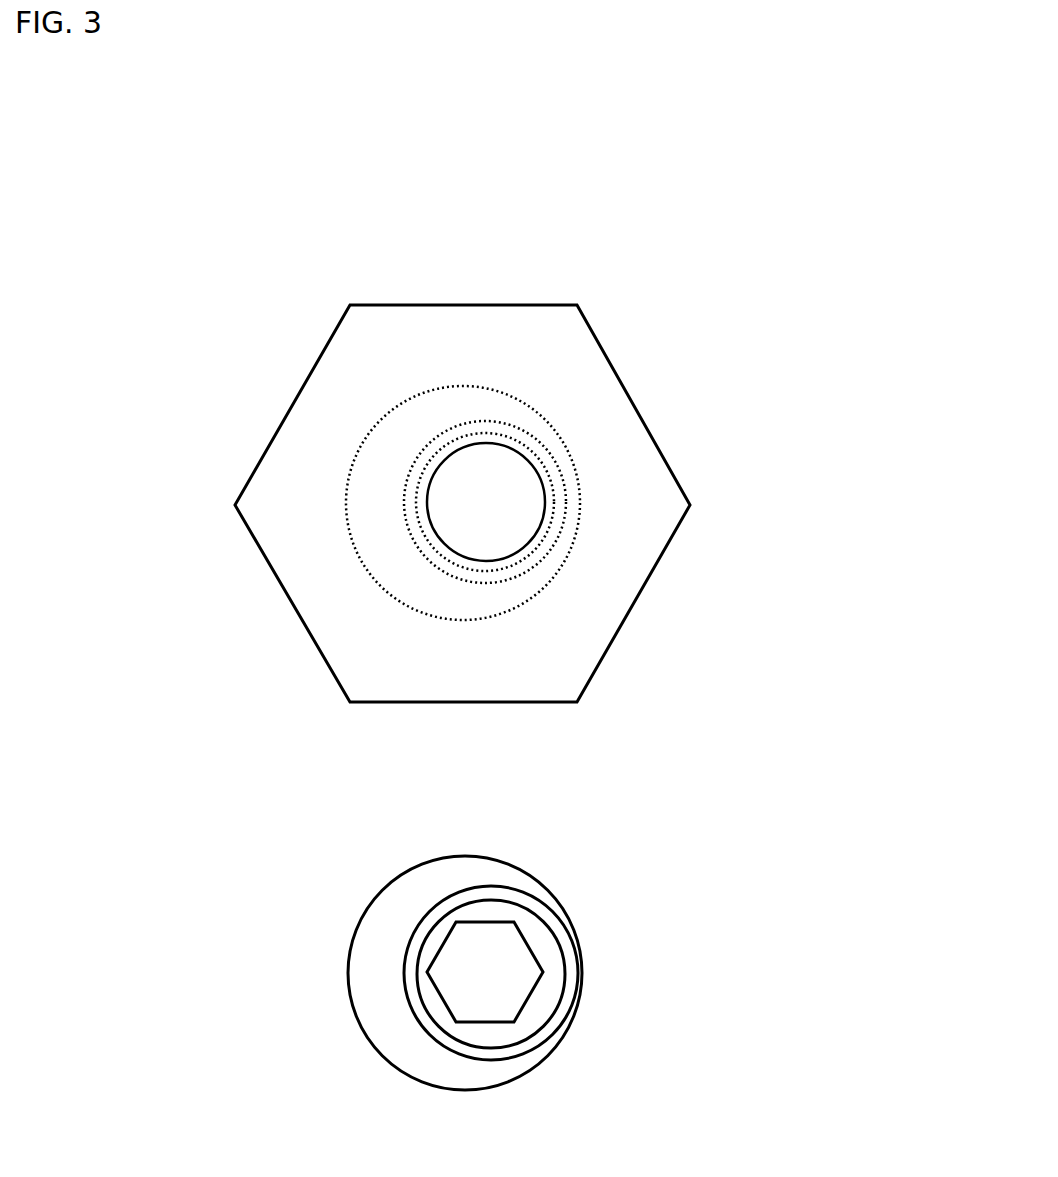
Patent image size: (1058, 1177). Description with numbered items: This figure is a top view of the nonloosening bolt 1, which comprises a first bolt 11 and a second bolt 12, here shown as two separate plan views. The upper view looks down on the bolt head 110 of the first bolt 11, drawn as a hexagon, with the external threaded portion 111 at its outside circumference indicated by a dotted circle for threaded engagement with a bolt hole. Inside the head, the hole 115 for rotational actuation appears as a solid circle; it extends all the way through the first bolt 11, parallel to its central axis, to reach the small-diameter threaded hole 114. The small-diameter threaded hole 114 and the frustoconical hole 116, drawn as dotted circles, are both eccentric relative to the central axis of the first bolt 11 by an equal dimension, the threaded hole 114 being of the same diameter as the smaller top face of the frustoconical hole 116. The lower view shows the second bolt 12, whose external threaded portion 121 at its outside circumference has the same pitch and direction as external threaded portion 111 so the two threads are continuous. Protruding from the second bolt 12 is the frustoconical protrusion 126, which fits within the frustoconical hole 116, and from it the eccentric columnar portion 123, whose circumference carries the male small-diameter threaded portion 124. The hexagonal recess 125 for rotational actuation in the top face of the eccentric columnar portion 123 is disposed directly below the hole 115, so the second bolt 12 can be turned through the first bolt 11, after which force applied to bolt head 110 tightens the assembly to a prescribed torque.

The nonloosening bolt 1 is at (348, 222).
The first bolt 11 is at (197, 262).
The bolt head 110 is at (268, 445).
The external threaded portion 111 is at (367, 563).
The small-diameter threaded hole 114 is at (485, 437).
The hole for rotational actuation 115 is at (460, 463).
The frustoconical hole 116 is at (463, 575).
The second bolt 12 is at (195, 852).
The external threaded portion 121 is at (365, 1033).
The eccentric columnar portion 123 is at (532, 940).
The small-diameter threaded portion 124 is at (488, 903).
The recess for rotational actuation 125 is at (562, 1103).
The frustoconical protrusion 126 is at (552, 938).